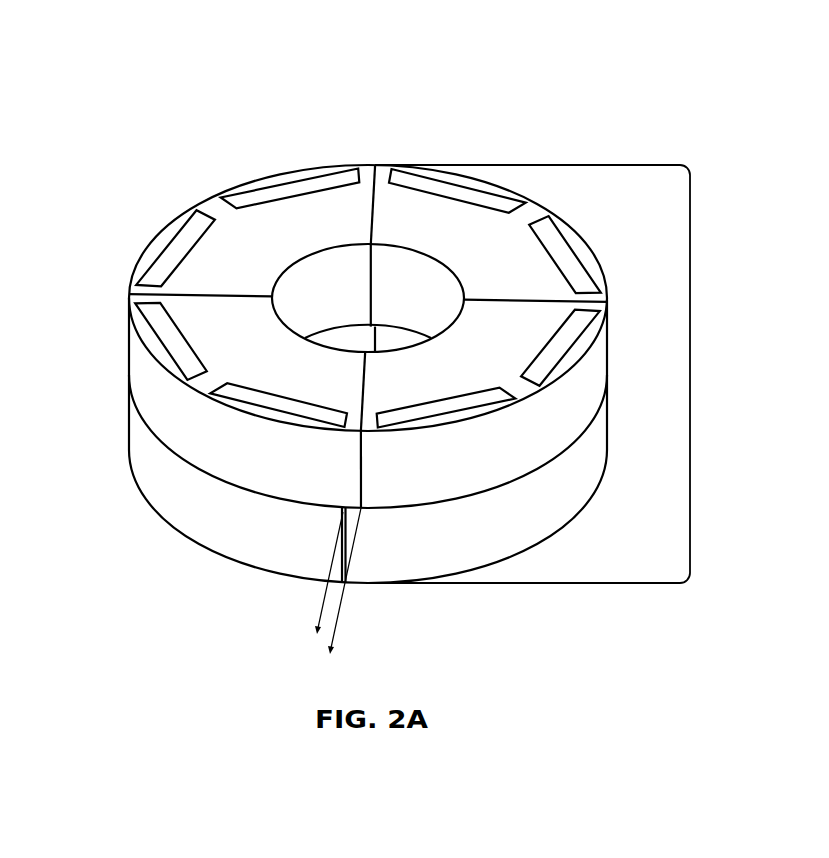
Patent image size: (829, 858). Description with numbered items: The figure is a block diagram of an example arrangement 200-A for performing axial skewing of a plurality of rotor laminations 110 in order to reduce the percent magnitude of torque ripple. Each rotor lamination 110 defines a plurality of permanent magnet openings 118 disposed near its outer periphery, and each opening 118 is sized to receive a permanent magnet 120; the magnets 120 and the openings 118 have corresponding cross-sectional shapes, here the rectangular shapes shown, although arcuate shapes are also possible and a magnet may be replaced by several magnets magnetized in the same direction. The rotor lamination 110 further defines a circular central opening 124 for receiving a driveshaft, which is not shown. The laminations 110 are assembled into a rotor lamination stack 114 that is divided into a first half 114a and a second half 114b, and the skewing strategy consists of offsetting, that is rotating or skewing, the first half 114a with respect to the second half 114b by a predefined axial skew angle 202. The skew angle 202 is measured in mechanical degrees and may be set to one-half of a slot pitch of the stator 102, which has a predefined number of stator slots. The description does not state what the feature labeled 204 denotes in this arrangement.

The arrangement 200-A is at (539, 108).
The stator 102 is at (233, 196).
The rotor lamination 110 is at (244, 358).
The rotor lamination stack 114 is at (690, 373).
The first half of the rotor lamination stack 114a is at (580, 376).
The second half of the rotor lamination stack 114b is at (580, 455).
The permanent magnet opening 118 is at (496, 200).
The permanent magnet 120 is at (282, 184).
The circular central opening 124 is at (340, 333).
The axial skew angle 202 is at (273, 600).
The slot 204 is at (320, 182).